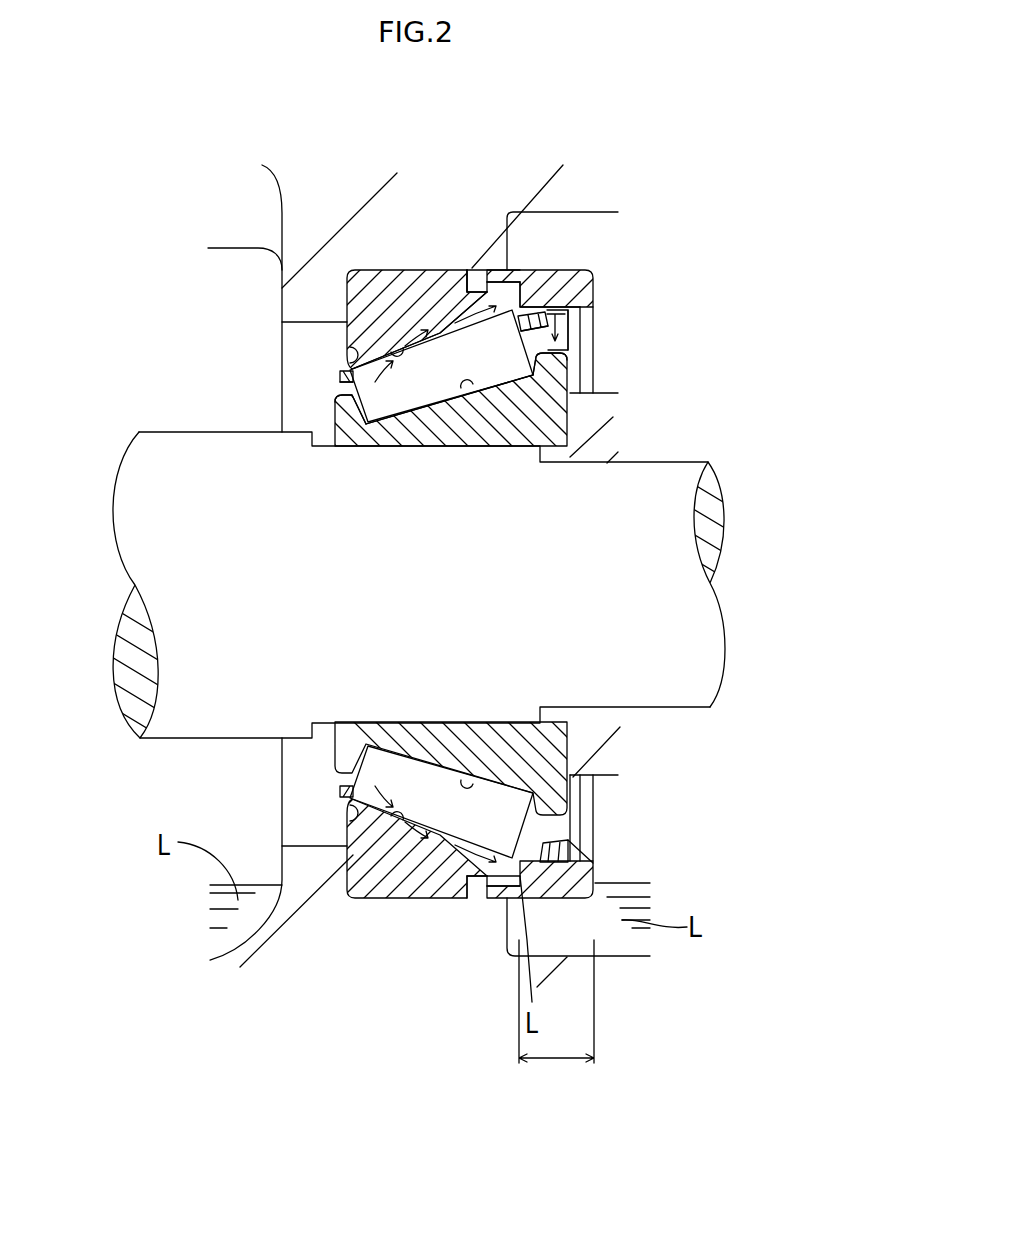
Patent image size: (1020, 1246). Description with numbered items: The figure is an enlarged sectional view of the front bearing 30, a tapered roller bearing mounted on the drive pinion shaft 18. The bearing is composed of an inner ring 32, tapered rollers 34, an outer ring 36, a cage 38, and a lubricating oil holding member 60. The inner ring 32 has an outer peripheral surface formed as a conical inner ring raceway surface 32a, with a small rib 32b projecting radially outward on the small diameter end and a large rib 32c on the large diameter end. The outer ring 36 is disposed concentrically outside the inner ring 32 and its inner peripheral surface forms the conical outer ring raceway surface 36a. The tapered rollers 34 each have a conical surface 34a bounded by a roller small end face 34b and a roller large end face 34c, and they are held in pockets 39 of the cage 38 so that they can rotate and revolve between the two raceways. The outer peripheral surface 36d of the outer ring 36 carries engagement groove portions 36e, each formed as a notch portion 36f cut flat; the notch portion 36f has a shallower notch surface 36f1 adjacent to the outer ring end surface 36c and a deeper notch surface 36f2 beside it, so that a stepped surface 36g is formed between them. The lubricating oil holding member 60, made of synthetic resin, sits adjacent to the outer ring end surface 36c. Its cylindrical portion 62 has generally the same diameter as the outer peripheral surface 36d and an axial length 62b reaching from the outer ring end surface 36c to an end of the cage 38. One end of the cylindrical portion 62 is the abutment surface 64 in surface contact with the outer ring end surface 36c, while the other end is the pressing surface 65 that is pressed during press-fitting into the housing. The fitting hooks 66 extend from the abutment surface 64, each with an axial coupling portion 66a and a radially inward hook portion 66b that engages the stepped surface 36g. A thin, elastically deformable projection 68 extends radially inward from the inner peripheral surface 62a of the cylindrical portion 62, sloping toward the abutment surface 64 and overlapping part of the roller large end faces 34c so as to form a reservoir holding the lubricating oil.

The drive pinion shaft 18 is at (181, 418).
The front bearing 30 is at (617, 287).
The inner ring 32 is at (578, 410).
The inner ring raceway surface 32a is at (497, 388).
The small rib 32b is at (350, 443).
The large rib 32c is at (556, 360).
The tapered rollers 34 is at (562, 436).
The conical surface 34a is at (429, 410).
The roller small end face 34b is at (345, 397).
The roller large end face 34c is at (558, 352).
The outer ring 36 is at (339, 284).
The outer ring raceway surface 36a is at (392, 345).
The outer ring end surface 36c is at (555, 298).
The outer peripheral surface 36d is at (383, 272).
The engagement groove portions 36e is at (468, 270).
The notch portion 36f is at (540, 118).
The notch surface 36f1 is at (493, 272).
The notch surface 36f2 is at (467, 272).
The stepped surface 36g is at (480, 285).
The cage 38 is at (342, 378).
The pockets 39 is at (350, 347).
The lubricating oil holding member 60 is at (590, 906).
The cylindrical portion 62 is at (555, 890).
The inner peripheral surface 62a is at (557, 840).
The axial length 62b is at (556, 1019).
The abutment surface 64 is at (504, 880).
The pressing surface 65 is at (595, 878).
The fitting hooks 66 is at (470, 896).
The coupling portion 66a is at (490, 896).
The hook portion 66b is at (476, 896).
The projection 68 is at (573, 845).